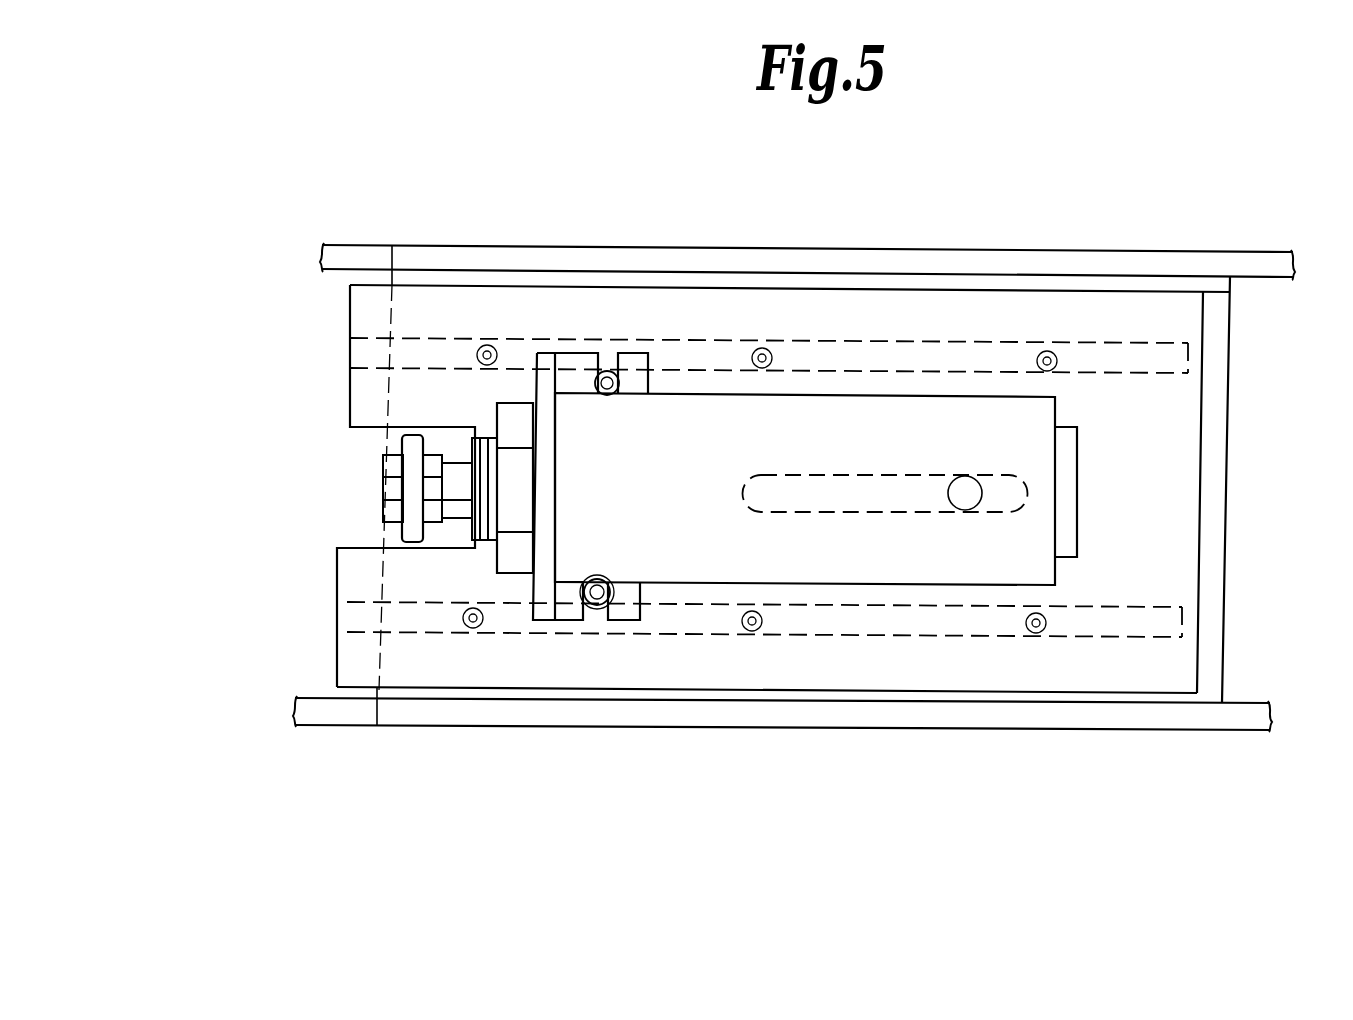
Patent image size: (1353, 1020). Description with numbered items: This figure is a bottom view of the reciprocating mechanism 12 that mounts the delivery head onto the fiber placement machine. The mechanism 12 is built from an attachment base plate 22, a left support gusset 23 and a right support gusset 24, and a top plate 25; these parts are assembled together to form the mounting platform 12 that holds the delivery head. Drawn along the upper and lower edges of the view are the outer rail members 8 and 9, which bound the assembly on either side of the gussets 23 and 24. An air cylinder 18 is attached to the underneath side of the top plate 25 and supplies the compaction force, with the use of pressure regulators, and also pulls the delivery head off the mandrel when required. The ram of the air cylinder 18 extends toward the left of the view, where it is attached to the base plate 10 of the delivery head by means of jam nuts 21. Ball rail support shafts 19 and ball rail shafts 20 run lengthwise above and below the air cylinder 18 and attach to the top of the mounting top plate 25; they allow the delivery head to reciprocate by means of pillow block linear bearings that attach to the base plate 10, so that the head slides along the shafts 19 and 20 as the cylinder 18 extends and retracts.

The lower rail 8 is at (503, 708).
The upper rail 9 is at (640, 262).
The base plate 10 is at (401, 437).
The reciprocating mechanism 12 is at (255, 508).
The air cylinder 18 is at (933, 562).
The ball rail support shafts 19 is at (375, 355).
The ball rail shafts 20 is at (345, 620).
The jam nuts 21 is at (390, 497).
The attachment base plate 22 is at (1192, 452).
The left support gusset 23 is at (945, 283).
The right support gusset 24 is at (1110, 700).
The top plate 25 is at (1157, 580).